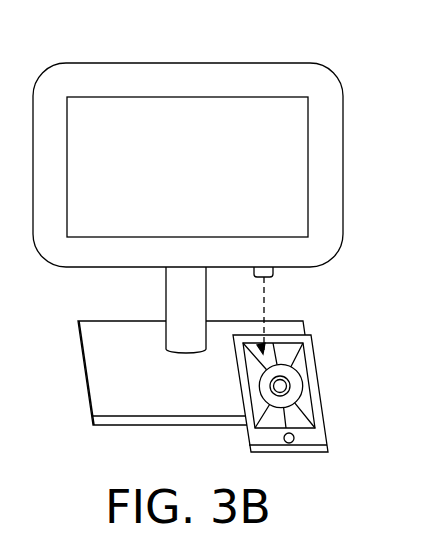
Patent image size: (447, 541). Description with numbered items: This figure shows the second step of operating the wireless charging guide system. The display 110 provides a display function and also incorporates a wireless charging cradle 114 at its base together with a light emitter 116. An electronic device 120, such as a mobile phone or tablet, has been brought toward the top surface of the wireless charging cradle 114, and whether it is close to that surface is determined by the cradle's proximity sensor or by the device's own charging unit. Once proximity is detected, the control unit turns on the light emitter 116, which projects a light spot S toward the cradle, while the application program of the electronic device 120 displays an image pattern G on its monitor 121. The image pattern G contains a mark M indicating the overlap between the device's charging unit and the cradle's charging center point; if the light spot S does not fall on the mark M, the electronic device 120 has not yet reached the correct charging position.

The display 110 is at (188, 63).
The wireless charging cradle 114 is at (198, 402).
The light emitter 116 is at (266, 272).
The electronic device 120 is at (314, 360).
The monitor 121 is at (305, 430).
The light spot S is at (261, 349).
The mark M is at (291, 388).
The image pattern G is at (306, 407).